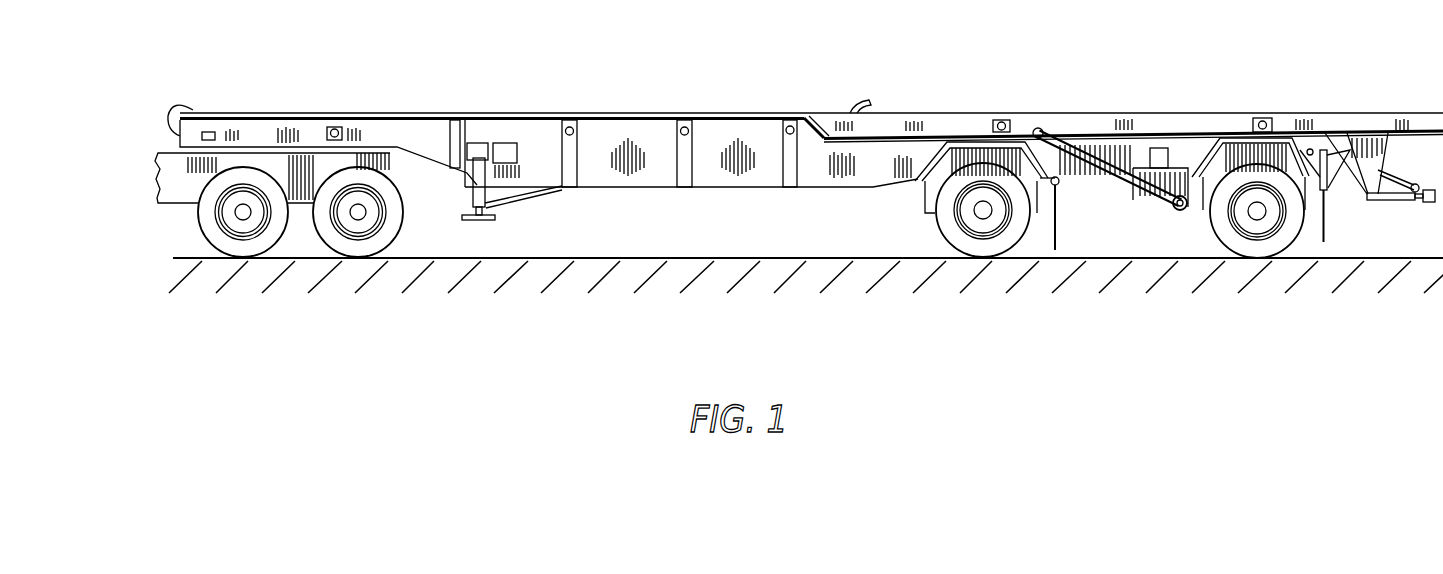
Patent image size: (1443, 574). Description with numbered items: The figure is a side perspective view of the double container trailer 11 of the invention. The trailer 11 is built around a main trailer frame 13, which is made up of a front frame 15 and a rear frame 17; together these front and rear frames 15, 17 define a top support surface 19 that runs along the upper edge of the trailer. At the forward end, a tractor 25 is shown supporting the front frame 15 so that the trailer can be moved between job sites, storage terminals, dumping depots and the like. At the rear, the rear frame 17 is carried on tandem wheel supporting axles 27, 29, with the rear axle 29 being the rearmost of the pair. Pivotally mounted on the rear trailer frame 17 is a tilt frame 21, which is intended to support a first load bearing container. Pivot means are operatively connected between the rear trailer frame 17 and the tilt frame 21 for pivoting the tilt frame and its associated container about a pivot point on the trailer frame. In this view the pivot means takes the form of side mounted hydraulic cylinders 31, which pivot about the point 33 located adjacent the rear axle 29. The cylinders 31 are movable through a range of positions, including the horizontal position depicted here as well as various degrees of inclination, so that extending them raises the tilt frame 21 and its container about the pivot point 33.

The double container trailer 11 is at (651, 76).
The main trailer frame 13 is at (710, 178).
The front frame 15 is at (253, 135).
The rear frame 17 is at (1123, 155).
The top support surface 19 is at (763, 115).
The tilt frame 21 is at (1212, 123).
The tractor 25 is at (302, 197).
The tandem wheel supporting axle 27 is at (984, 212).
The rear axle 29 is at (1258, 213).
The hydraulic cylinder 31 is at (1158, 204).
The pivot point 33 is at (1186, 208).